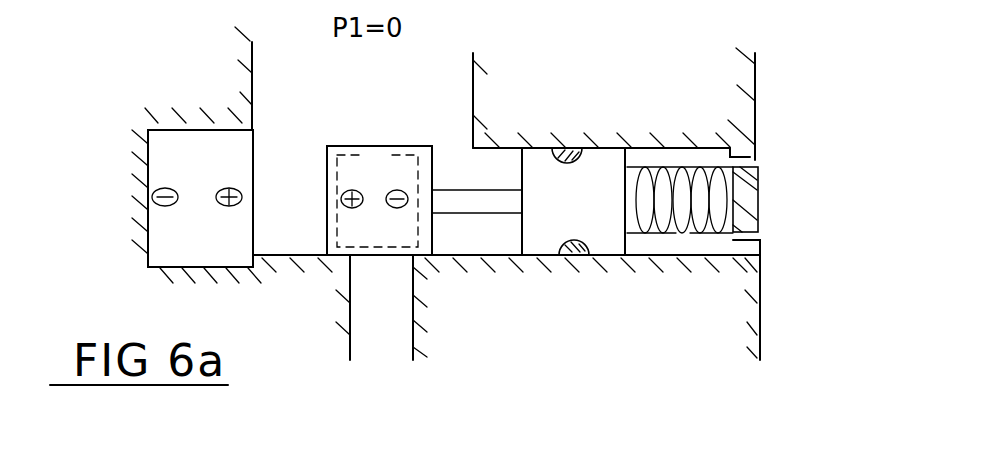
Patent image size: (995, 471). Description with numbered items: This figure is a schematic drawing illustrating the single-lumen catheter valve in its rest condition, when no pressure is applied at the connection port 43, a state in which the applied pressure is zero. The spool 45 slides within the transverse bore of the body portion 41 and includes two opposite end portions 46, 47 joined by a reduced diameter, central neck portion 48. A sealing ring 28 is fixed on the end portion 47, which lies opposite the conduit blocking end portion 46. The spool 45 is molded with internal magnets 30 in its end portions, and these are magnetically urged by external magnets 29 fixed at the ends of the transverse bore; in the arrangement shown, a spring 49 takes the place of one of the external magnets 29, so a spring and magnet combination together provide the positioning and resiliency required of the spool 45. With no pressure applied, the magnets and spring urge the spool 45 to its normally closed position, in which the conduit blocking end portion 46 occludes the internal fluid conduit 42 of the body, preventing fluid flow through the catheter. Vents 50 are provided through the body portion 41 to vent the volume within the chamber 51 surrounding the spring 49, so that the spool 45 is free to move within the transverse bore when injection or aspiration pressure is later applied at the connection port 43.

The sealing ring 28 is at (583, 148).
The external magnets 29 is at (163, 228).
The internal magnets 30 is at (379, 200).
The body portion 41 is at (632, 341).
The internal fluid conduit 42 is at (365, 320).
The connection port 43 is at (268, 67).
The spool 45 is at (610, 140).
The conduit blocking end portion 46 is at (432, 150).
The end portion 47 is at (535, 158).
The central neck portion 48 is at (480, 180).
The spring 49 is at (685, 233).
The vents 50 is at (757, 238).
The chamber 51 is at (720, 145).